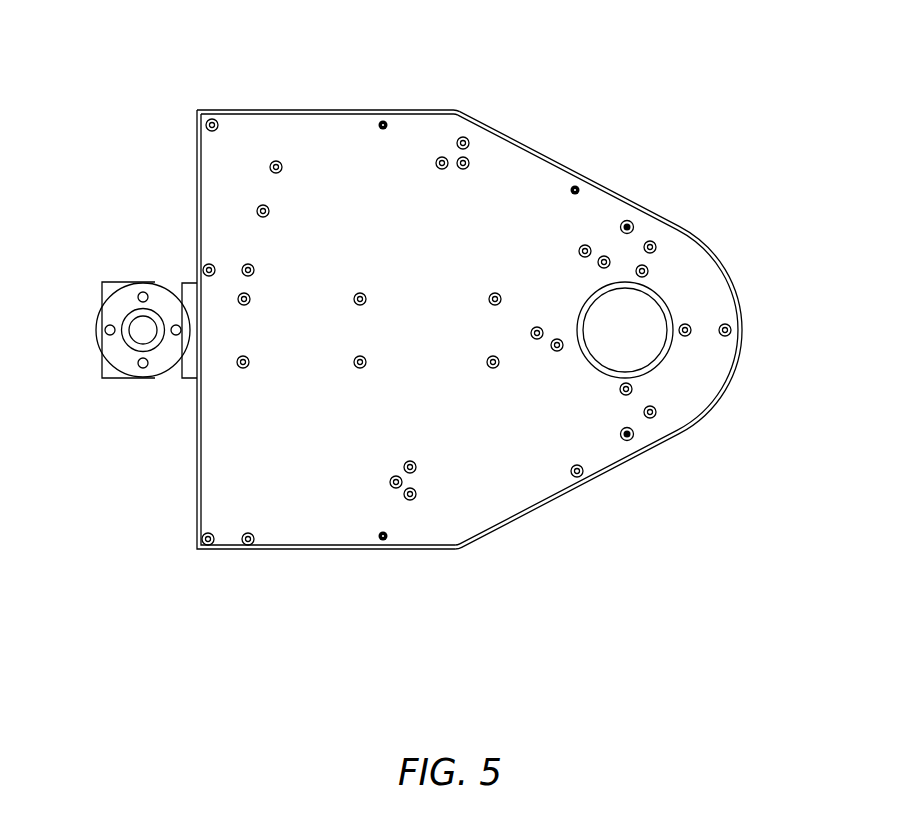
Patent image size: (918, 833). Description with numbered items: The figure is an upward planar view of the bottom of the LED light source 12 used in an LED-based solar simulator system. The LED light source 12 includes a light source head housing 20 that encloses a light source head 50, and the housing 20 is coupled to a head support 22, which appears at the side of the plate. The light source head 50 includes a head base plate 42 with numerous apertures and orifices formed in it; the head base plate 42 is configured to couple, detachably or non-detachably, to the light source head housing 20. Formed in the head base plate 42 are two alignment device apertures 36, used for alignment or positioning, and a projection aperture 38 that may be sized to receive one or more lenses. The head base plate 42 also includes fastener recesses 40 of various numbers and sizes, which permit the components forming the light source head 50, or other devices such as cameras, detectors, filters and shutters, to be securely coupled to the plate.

The LED light source 12 is at (747, 165).
The light source head housing 20 is at (322, 110).
The head support 22 is at (129, 314).
The alignment device aperture 36 is at (628, 222).
The projection aperture 38 is at (637, 341).
The fastener recesses 40 is at (417, 494).
The head base plate 42 is at (277, 481).
The light source head 50 is at (533, 164).